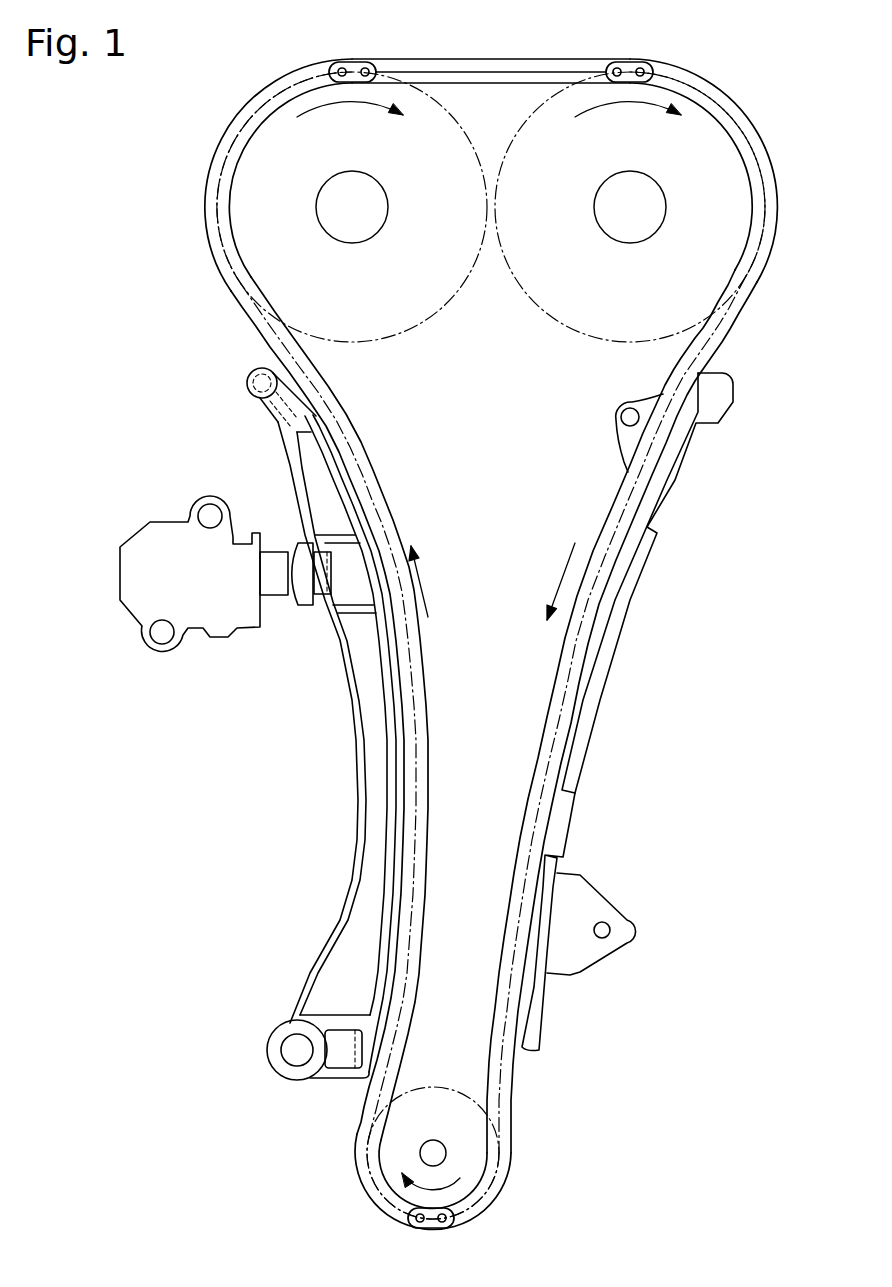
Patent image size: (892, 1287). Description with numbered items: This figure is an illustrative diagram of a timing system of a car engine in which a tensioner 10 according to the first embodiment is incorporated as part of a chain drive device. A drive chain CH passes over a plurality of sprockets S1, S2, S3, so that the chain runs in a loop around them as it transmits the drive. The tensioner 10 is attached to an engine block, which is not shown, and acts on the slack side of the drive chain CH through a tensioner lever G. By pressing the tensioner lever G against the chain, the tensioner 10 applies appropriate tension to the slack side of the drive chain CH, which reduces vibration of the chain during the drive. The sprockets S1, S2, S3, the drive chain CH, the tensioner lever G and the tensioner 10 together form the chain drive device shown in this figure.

The tensioner 10 is at (172, 562).
The drive chain CH is at (705, 345).
The sprocket S1 is at (468, 1152).
The sprocket S2 is at (262, 200).
The sprocket S3 is at (700, 193).
The tensioner lever G is at (365, 928).